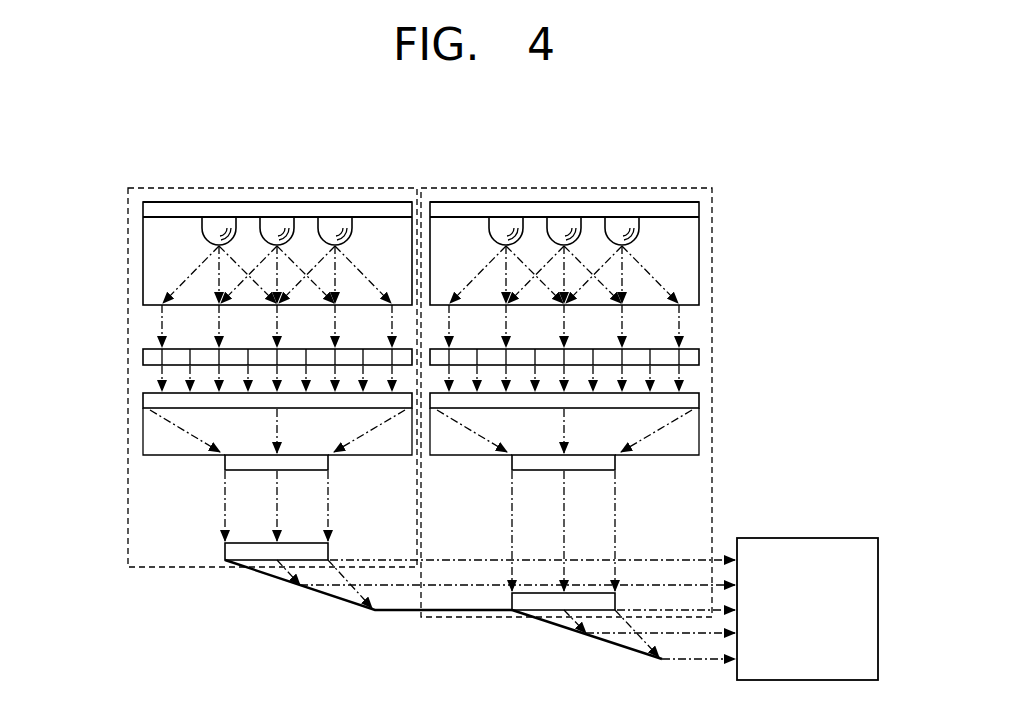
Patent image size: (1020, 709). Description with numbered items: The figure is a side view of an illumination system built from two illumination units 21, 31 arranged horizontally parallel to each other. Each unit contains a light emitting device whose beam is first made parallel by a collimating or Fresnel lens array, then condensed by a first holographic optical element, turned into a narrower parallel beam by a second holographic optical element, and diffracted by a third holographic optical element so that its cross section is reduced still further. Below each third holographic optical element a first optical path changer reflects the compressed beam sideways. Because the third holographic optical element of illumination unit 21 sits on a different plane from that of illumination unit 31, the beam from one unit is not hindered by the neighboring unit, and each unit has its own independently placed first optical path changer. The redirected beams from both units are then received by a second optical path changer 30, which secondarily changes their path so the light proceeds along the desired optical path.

The illumination unit 21 is at (237, 186).
The illumination unit 31 is at (524, 186).
The second optical path changer 30 is at (808, 538).